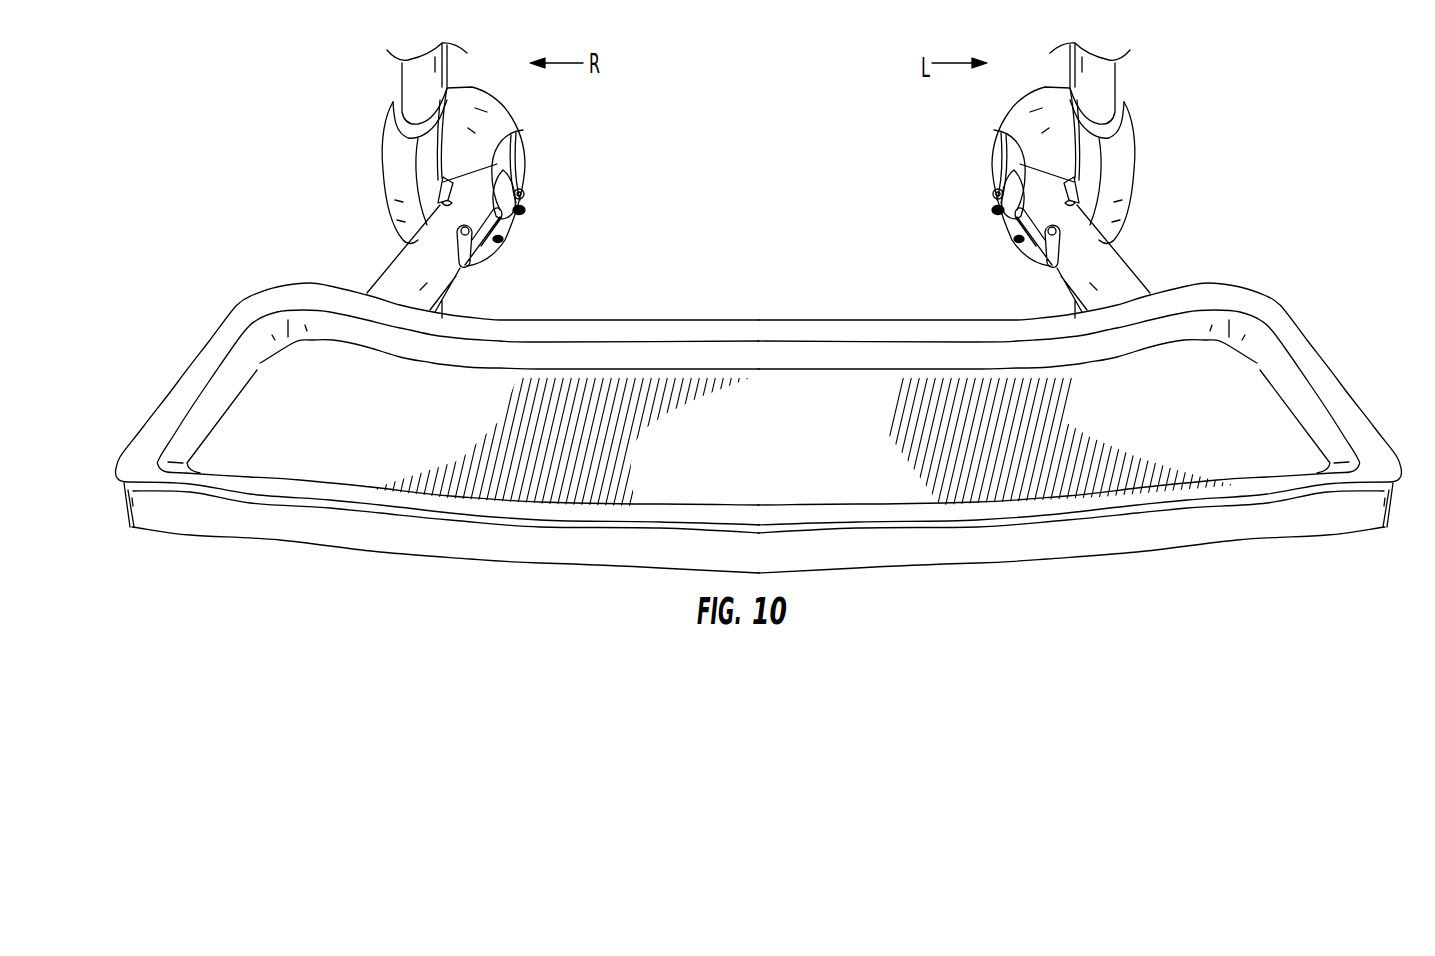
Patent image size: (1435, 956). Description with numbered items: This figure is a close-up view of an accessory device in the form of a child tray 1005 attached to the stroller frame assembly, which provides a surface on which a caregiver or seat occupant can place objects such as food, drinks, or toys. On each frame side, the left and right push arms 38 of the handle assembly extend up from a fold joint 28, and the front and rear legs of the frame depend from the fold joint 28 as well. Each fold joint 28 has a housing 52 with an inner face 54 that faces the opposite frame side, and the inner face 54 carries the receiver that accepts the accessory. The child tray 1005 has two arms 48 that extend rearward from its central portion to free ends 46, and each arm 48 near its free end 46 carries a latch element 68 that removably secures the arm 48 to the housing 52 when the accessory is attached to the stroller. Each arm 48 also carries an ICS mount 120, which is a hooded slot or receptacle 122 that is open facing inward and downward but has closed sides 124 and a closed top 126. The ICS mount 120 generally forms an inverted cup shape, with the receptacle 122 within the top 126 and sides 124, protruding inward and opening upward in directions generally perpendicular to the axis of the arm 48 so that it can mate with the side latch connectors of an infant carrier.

The child tray 1005 is at (1297, 328).
The push arm 38 is at (444, 62).
The housing 52 is at (483, 112).
The fold joint 28 is at (375, 164).
The inner face 54 is at (507, 132).
The end 46 is at (452, 183).
The closed side 124 is at (503, 185).
The ICS mount 120 is at (524, 192).
The receptacle 122 is at (526, 209).
The closed top 126 is at (500, 220).
The latch element 68 is at (505, 240).
The arm 48 is at (452, 276).